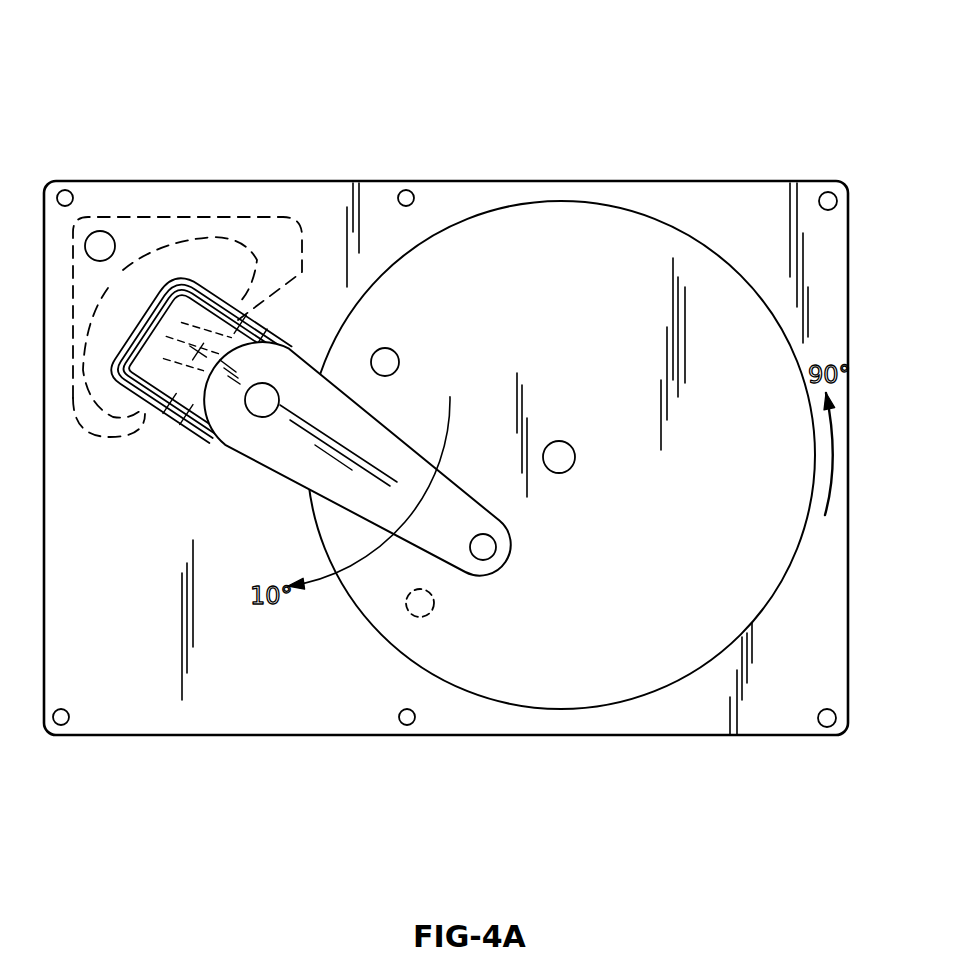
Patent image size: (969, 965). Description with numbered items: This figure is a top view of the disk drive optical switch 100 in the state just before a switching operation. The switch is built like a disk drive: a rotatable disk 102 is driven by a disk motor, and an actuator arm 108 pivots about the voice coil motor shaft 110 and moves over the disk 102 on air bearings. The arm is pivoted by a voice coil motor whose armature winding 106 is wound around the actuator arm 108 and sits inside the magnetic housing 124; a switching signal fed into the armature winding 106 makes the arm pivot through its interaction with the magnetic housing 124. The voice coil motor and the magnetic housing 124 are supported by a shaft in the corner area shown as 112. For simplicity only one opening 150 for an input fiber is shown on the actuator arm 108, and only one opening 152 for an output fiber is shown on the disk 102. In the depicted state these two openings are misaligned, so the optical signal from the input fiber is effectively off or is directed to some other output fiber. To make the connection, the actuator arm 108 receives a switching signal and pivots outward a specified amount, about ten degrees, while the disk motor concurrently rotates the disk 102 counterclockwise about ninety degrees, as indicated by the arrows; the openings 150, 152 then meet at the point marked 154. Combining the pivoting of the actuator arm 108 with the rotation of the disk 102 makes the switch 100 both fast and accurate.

The disk drive optical switch 100 is at (490, 100).
The disk 102 is at (638, 258).
The armature winding 106 is at (167, 290).
The actuator arm 108 is at (287, 462).
The voice coil motor shaft 110 is at (263, 397).
The support area 112 is at (98, 242).
The magnetic housing 124 is at (220, 257).
The opening 150 is at (483, 547).
The opening 152 is at (387, 360).
The meeting point 154 is at (422, 605).